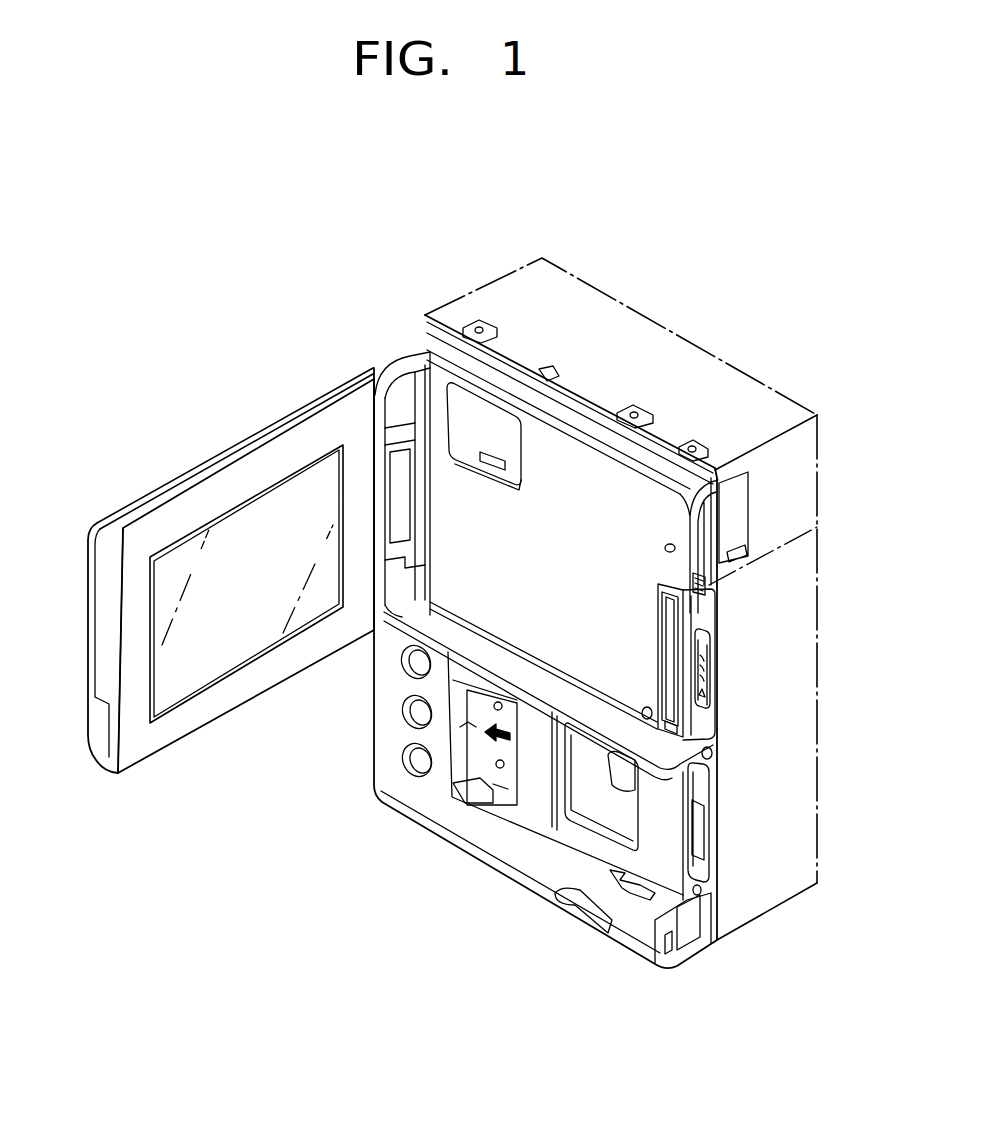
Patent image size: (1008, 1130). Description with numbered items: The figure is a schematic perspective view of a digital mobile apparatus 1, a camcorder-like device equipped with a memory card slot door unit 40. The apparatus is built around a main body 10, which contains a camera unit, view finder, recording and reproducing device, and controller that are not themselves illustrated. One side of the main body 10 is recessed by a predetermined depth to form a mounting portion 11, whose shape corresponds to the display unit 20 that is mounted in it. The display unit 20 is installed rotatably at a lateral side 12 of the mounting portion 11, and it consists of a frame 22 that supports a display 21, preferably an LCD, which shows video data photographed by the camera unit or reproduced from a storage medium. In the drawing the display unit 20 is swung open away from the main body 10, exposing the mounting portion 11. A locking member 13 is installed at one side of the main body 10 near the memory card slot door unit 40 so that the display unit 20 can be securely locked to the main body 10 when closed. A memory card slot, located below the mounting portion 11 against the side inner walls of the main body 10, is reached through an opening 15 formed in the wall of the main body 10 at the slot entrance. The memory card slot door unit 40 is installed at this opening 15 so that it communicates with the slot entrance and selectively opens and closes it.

The digital mobile apparatus 1 is at (726, 226).
The main body 10 is at (818, 508).
The mounting portion 11 is at (573, 470).
The lateral side 12 is at (410, 393).
The locking member 13 is at (713, 588).
The opening 15 is at (716, 633).
The display unit 20 is at (103, 520).
The display 21 is at (182, 557).
The frame 22 is at (237, 473).
The memory card slot door unit 40 is at (720, 688).